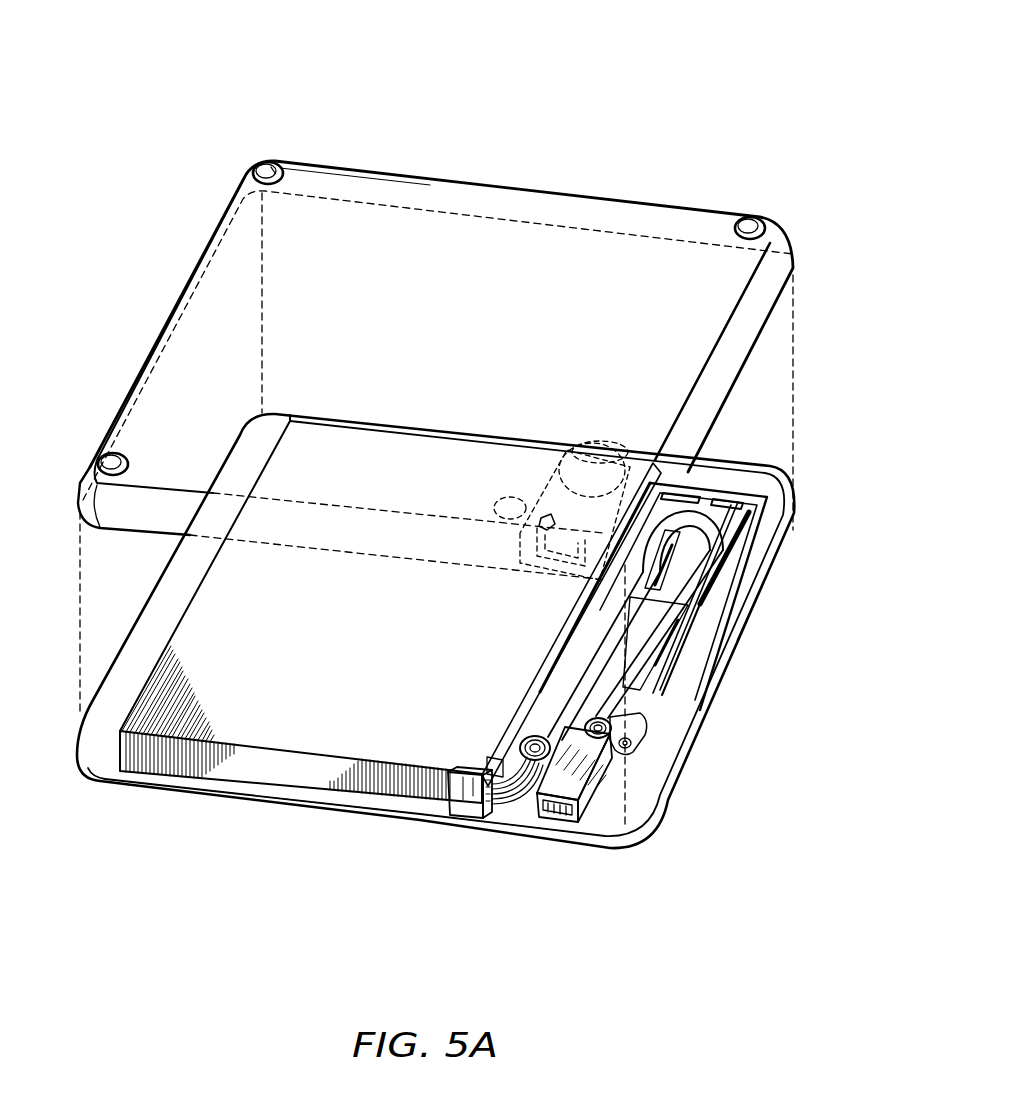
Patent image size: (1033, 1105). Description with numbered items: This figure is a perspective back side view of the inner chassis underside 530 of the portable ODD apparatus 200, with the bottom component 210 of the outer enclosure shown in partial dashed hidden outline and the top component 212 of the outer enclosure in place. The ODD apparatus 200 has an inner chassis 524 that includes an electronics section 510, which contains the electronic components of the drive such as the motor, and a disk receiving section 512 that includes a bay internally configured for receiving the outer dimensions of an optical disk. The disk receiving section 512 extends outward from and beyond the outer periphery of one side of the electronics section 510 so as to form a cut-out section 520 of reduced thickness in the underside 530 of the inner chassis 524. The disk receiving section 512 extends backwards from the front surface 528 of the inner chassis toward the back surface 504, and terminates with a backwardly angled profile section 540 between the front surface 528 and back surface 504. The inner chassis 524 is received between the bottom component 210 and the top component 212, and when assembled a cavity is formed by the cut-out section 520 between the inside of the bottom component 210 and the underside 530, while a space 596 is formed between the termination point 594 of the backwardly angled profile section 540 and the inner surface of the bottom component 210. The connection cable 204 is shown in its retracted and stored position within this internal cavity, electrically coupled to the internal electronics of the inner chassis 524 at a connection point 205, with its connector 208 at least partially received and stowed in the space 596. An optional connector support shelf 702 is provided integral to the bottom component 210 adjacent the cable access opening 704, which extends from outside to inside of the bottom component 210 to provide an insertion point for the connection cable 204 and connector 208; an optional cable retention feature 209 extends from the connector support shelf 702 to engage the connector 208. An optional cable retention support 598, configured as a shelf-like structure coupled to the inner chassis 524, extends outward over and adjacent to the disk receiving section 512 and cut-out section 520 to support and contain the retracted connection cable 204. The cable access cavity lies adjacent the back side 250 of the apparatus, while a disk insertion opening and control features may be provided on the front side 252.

The portable ODD apparatus 200 is at (198, 40).
The bottom component 210 is at (240, 174).
The front side 252 is at (527, 187).
The inner chassis 524 is at (193, 350).
The electronics section 510 is at (422, 437).
The back side 250 is at (293, 807).
The top component 212 is at (697, 730).
The inner chassis underside 530 is at (200, 647).
The back surface 504 is at (217, 770).
The cable access opening 704 is at (578, 458).
The connector support shelf 702 is at (563, 507).
The cable retention feature 209 is at (545, 520).
The front surface 528 is at (672, 456).
The cut-out section 520 is at (723, 497).
The disk receiving section 512 is at (747, 508).
The cable retention support 598 is at (757, 532).
The connection cable 204 is at (701, 567).
The backwardly angled profile section 540 is at (655, 716).
The termination point 594 is at (500, 765).
The connector 208 is at (600, 750).
The connection point 205 is at (470, 812).
The space 596 is at (530, 784).